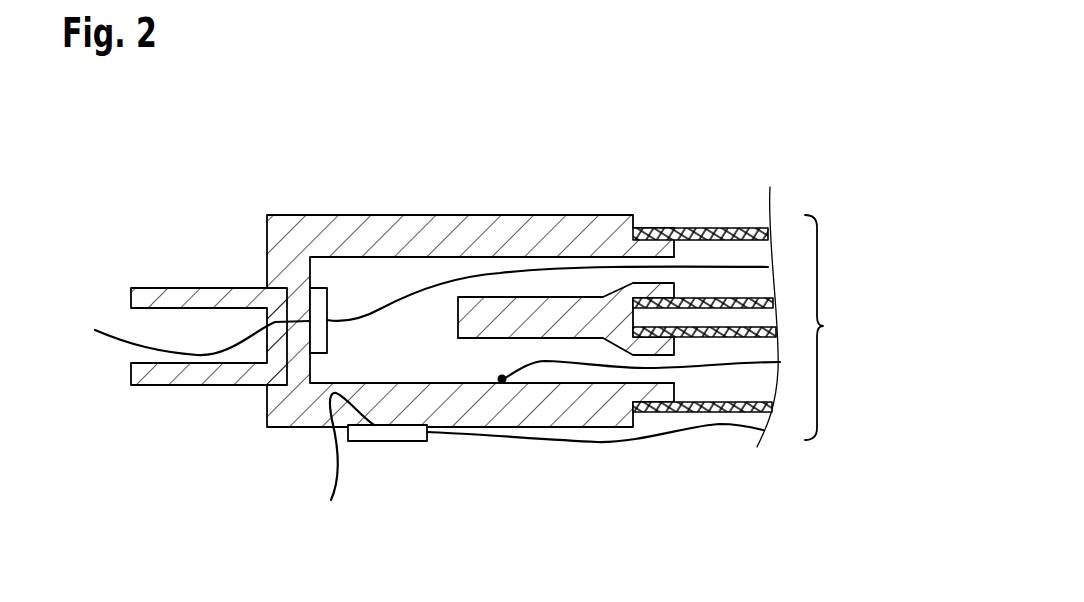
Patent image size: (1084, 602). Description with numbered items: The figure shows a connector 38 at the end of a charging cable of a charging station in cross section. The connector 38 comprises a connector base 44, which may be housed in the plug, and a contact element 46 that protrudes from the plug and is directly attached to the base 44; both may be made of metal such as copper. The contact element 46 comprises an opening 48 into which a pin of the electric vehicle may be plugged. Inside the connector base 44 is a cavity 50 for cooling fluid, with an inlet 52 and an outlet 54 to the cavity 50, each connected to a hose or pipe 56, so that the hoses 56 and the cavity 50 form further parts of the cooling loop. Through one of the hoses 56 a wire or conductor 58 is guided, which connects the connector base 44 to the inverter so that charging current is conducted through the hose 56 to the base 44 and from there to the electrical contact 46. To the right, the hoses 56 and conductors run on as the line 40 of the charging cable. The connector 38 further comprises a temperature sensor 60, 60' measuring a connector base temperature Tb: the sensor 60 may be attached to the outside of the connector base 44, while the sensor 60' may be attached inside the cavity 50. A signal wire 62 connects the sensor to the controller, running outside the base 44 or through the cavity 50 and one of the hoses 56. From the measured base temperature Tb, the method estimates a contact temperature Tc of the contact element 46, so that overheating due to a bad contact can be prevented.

The connector 38 is at (650, 128).
The line 40 is at (834, 327).
The connector base 44 is at (484, 215).
The contact element 46 is at (202, 385).
The opening 48 is at (160, 328).
The cavity 50 is at (437, 350).
The inlet 52 is at (538, 350).
The outlet 54 is at (542, 282).
The hose or pipe 56 is at (705, 228).
The wire or conductor 58 is at (723, 368).
The temperature sensor 60 is at (387, 478).
The temperature sensor 60' is at (335, 242).
The signal wire 62 is at (407, 293).
The connector base temperature Tb is at (221, 424).
The contact temperature Tc is at (148, 377).